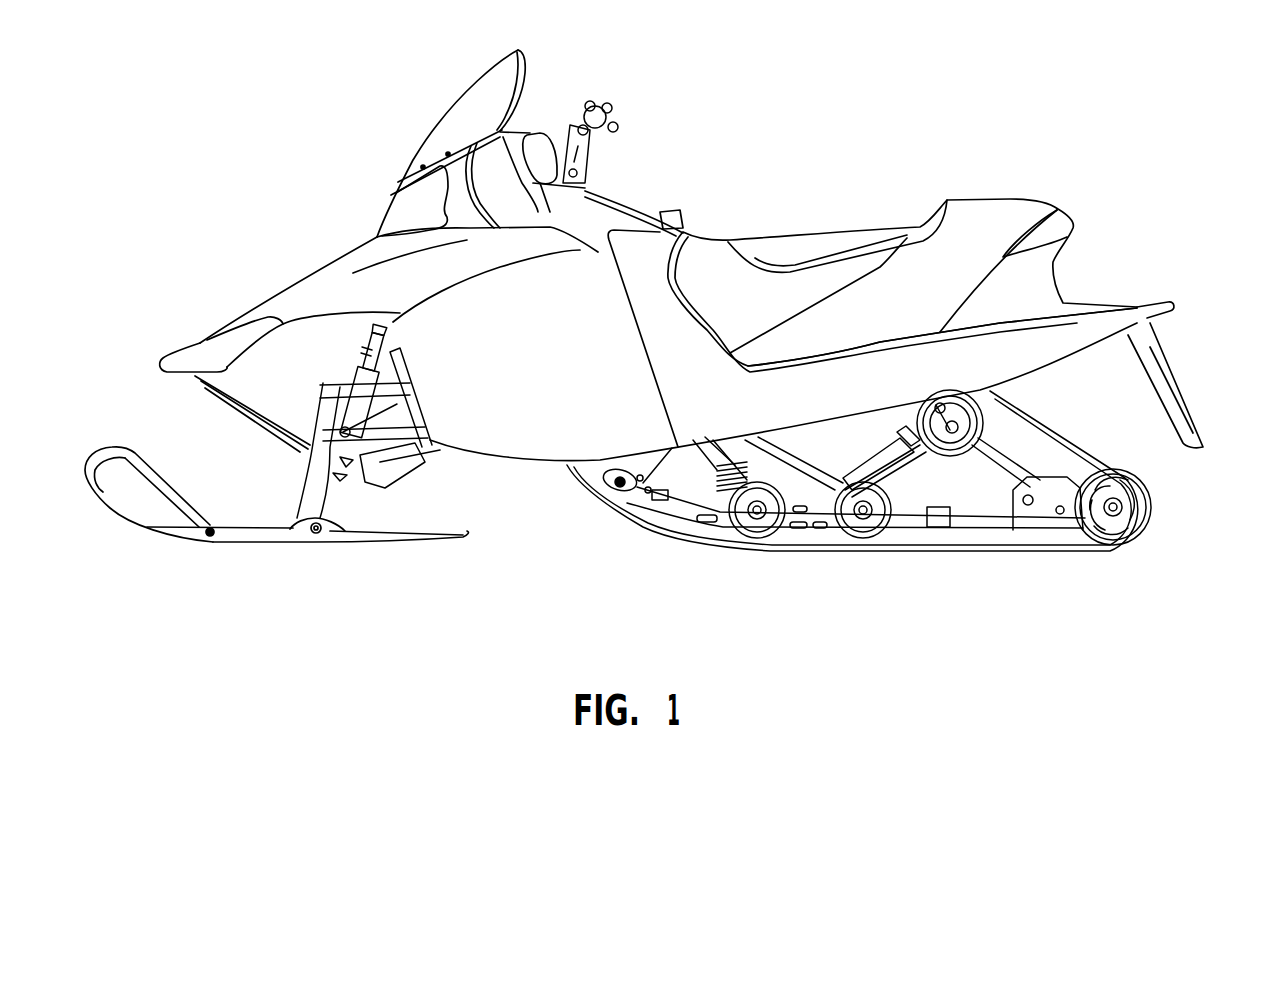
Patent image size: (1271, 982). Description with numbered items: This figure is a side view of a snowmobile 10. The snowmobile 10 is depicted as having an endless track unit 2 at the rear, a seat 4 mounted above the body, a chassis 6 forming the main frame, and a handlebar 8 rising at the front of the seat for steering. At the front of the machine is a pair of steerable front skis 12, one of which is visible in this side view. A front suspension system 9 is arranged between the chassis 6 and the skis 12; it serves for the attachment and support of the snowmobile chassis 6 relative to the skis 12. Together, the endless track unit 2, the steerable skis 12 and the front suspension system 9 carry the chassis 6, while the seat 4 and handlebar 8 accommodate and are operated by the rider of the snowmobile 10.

The snowmobile 10 is at (265, 180).
The endless track unit 2 is at (997, 590).
The seat 4 is at (830, 230).
The chassis 6 is at (842, 399).
The handlebar 8 is at (603, 107).
The front suspension system 9 is at (420, 472).
The steerable front skis 12 is at (263, 543).